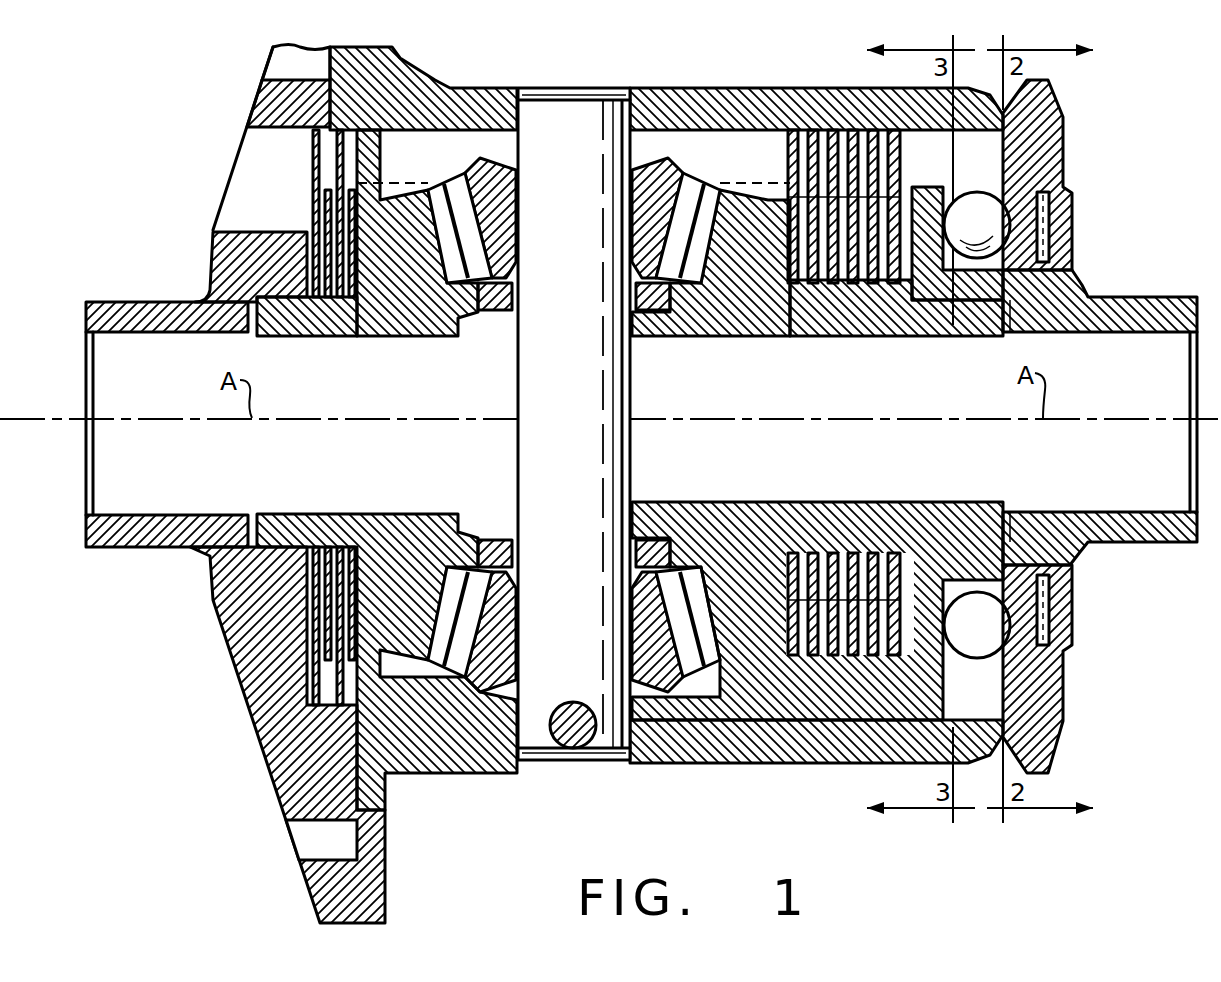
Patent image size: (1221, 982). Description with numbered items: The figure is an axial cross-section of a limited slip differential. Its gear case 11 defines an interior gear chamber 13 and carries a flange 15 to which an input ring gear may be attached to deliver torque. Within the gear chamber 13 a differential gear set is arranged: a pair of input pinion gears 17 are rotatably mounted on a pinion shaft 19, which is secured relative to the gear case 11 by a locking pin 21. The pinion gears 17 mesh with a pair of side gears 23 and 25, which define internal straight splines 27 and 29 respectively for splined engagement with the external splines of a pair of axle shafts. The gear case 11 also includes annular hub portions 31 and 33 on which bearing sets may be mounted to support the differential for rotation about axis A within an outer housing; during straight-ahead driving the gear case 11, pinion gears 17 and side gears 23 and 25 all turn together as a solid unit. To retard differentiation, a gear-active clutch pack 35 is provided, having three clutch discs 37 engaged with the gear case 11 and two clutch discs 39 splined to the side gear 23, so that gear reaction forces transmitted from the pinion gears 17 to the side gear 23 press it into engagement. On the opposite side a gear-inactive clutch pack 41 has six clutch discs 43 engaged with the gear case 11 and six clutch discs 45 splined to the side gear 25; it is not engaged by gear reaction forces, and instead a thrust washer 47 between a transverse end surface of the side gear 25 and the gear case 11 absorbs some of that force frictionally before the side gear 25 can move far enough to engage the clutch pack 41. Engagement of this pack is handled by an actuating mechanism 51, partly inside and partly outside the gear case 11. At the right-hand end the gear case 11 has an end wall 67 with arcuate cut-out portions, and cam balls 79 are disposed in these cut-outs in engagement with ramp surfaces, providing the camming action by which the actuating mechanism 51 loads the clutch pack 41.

The gear case 11 is at (740, 110).
The gear chamber 13 is at (468, 152).
The flange 15 is at (320, 907).
The input pinion gears 17 is at (672, 197).
The pinion shaft 19 is at (592, 123).
The locking pin 21 is at (572, 748).
The side gear 23 is at (423, 337).
The side gear 25 is at (737, 343).
The internal straight splines 27 is at (360, 343).
The internal straight splines 29 is at (797, 343).
The annular hub portion 31 is at (120, 547).
The annular hub portion 33 is at (1147, 530).
The clutch pack 35 is at (280, 185).
The clutch discs 37 is at (357, 135).
The clutch discs 39 is at (313, 270).
The clutch pack 41 is at (880, 549).
The clutch discs 43 is at (785, 178).
The clutch discs 45 is at (780, 597).
The thrust washer 47 is at (987, 337).
The actuating mechanism 51 is at (1082, 188).
The end wall 67 is at (1060, 712).
The cam balls 79 is at (937, 660).